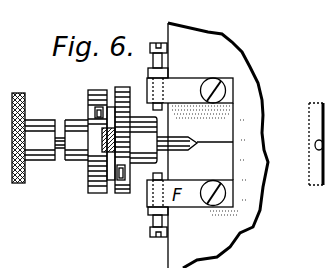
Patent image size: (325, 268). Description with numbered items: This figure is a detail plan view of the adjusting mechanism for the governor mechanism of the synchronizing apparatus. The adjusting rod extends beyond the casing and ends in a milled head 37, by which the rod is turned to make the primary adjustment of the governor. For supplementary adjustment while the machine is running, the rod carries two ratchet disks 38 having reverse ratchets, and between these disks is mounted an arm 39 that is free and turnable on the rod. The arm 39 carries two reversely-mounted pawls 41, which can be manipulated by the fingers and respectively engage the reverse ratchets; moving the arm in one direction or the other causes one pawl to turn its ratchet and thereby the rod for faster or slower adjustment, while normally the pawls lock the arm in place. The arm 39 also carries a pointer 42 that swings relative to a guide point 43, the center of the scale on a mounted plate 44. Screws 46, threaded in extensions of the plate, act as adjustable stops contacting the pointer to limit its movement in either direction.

The milled head 37 is at (22, 95).
The ratchet disks 38 is at (100, 193).
The arm 39 is at (108, 148).
The pawls 41 is at (88, 107).
The pointer 42 is at (184, 146).
The guide point 43 is at (227, 133).
The plate 44 is at (198, 80).
The screws 46 is at (153, 43).